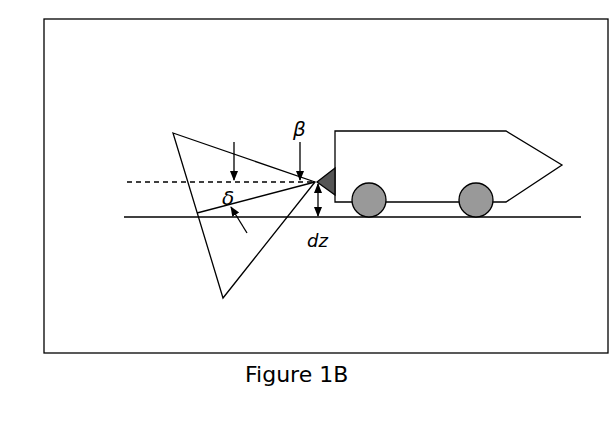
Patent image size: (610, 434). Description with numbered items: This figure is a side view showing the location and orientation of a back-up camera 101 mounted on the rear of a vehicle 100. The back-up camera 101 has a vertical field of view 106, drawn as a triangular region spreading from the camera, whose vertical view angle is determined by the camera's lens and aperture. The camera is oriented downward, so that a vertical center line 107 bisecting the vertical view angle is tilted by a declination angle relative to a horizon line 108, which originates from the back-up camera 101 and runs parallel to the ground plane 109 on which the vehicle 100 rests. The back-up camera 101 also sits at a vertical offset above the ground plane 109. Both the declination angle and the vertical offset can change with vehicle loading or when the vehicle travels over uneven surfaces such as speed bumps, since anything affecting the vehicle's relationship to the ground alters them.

The vehicle 100 is at (457, 131).
The back-up camera 101 is at (319, 176).
The vertical field of view 106 is at (198, 142).
The vertical center line 107 is at (222, 208).
The horizon line 108 is at (142, 180).
The ground plane 109 is at (530, 219).